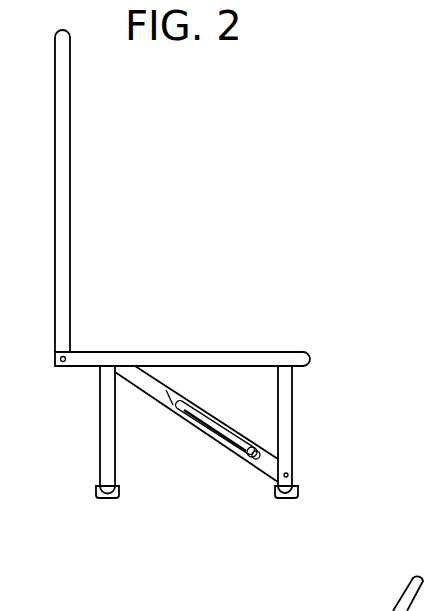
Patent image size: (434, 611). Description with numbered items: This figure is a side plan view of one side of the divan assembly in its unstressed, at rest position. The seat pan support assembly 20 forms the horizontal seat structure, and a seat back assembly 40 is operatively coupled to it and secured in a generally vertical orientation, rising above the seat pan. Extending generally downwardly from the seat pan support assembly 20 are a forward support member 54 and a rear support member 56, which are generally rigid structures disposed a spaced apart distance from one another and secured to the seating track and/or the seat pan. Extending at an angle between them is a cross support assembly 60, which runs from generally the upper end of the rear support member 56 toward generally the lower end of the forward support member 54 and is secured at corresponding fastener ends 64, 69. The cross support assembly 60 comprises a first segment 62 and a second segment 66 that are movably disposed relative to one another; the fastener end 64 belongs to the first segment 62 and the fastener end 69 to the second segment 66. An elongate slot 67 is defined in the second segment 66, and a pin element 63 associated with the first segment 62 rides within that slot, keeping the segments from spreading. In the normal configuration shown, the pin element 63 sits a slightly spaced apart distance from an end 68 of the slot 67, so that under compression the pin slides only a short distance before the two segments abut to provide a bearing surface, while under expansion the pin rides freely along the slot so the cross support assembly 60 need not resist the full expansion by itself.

The seat pan support assembly 20 is at (174, 351).
The seat back assembly 40 is at (71, 73).
The forward support member 54 is at (291, 383).
The rear support member 56 is at (107, 470).
The cross support assembly 60 is at (204, 397).
The first segment 62 is at (151, 406).
The pin element 63 is at (255, 466).
The fastener end 64 is at (133, 376).
The second segment 66 is at (218, 447).
The elongate slot 67 is at (203, 420).
The end of the slot 68 is at (268, 449).
The fastener end 69 is at (259, 462).